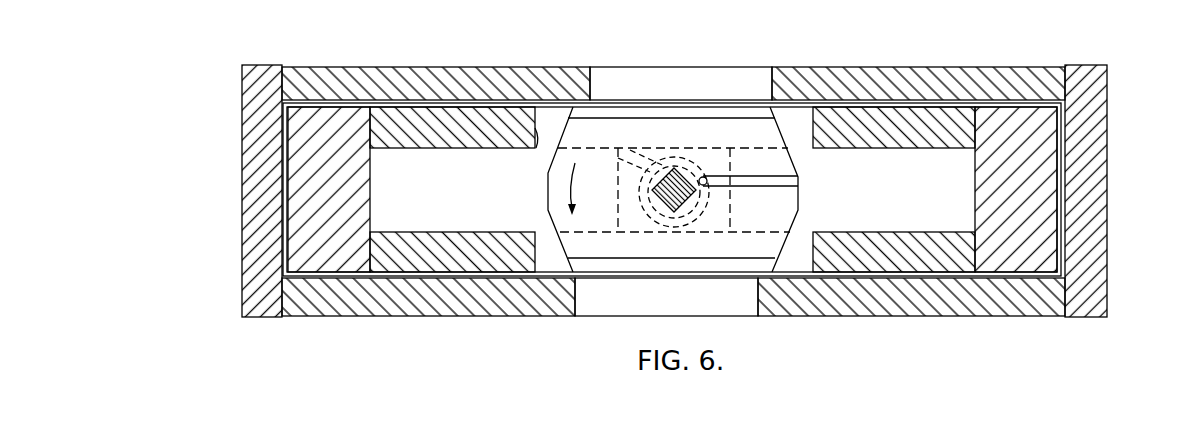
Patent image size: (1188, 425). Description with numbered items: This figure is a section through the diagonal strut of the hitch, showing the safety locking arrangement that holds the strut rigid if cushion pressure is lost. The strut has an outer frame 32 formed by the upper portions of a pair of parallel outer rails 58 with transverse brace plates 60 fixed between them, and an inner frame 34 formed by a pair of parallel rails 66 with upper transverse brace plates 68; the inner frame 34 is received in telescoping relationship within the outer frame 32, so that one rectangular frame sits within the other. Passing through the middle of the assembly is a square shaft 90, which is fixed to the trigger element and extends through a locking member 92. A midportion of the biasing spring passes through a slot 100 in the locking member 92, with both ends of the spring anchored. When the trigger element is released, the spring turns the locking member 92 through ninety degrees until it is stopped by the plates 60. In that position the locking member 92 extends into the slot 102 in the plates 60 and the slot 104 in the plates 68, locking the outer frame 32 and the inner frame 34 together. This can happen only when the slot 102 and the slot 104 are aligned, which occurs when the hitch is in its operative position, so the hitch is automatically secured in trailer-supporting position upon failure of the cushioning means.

The outer frame 32 is at (910, 76).
The inner frame 34 is at (901, 264).
The outer rail 58 is at (246, 178).
The transverse brace plate 60 is at (500, 72).
The rail 66 is at (308, 146).
The upper transverse brace plate 68 is at (448, 108).
The square shaft 90 is at (667, 196).
The locking member 92 is at (790, 207).
The slot 100 is at (797, 180).
The slot 102 is at (538, 148).
The slot 104 is at (590, 84).